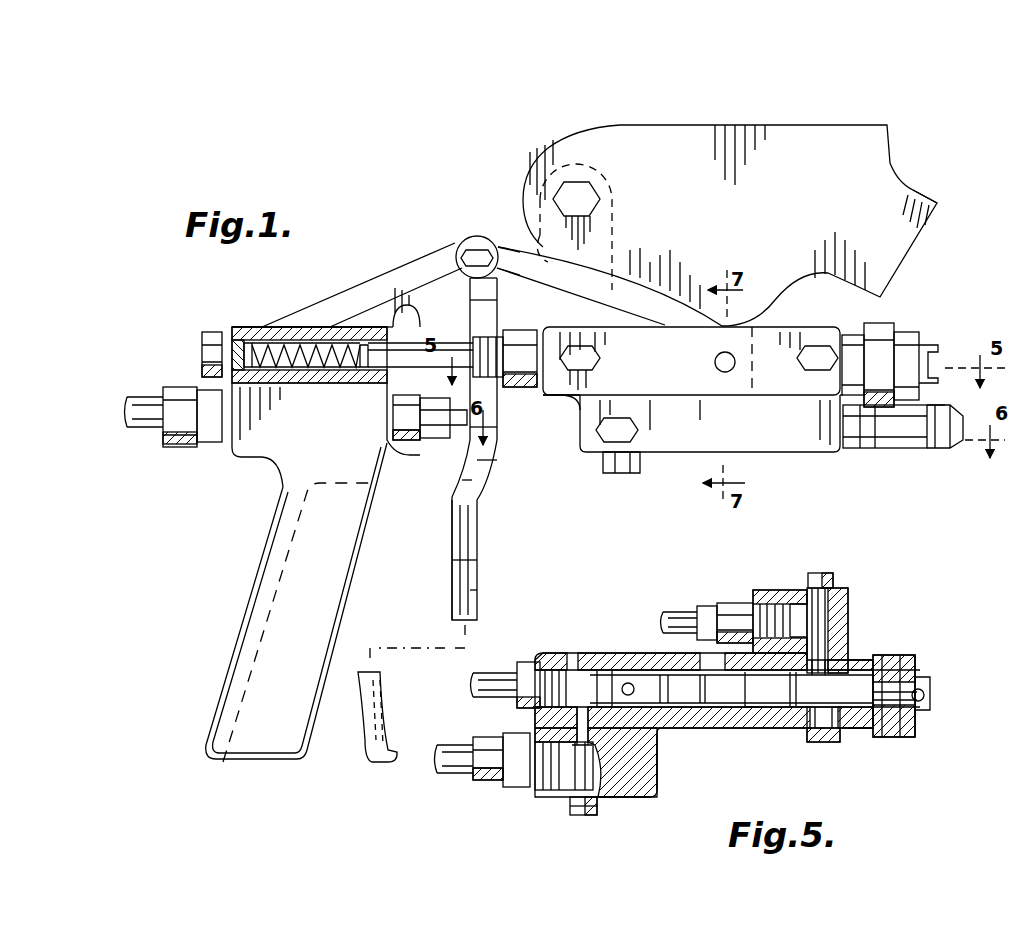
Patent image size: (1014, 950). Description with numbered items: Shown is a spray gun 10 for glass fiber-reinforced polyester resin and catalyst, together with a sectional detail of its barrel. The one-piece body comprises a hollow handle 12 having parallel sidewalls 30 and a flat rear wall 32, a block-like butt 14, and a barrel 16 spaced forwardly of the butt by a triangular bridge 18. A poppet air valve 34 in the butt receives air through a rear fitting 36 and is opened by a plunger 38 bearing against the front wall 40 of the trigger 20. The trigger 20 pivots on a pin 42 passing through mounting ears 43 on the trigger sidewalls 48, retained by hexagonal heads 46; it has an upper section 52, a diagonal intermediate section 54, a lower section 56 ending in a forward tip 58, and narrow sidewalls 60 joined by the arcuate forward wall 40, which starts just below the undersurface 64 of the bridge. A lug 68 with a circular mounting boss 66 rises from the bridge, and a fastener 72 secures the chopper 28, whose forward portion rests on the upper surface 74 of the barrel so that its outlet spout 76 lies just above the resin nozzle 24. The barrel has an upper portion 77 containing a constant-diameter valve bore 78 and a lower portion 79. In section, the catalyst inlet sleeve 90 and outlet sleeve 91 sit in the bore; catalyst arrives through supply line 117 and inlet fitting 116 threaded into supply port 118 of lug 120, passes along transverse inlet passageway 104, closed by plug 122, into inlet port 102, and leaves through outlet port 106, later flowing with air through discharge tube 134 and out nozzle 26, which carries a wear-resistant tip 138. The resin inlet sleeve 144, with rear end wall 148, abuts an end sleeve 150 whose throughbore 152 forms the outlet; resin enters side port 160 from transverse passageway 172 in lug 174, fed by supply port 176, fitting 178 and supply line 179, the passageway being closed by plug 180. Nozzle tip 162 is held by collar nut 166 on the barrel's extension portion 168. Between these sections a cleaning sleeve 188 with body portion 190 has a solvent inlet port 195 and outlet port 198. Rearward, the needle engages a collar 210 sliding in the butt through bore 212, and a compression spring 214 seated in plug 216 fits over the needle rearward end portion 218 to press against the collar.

In FIG. 1, the spray gun 10 is at (210, 276).
In FIG. 1, the handle 12 is at (232, 620).
In FIG. 1, the butt 14 is at (232, 330).
In FIG. 1, the barrel 16 is at (770, 462).
In FIG. 1, the bridge 18 is at (440, 268).
In FIG. 1, the trigger 20 is at (442, 575).
In FIG. 1, the resin nozzle 24 is at (935, 345).
In FIG. 5, the resin nozzle 24 is at (930, 725).
In FIG. 1, the catalyst nozzle 26 is at (945, 450).
In FIG. 1, the chopper 28 is at (562, 148).
In FIG. 1, the sidewalls 30 is at (262, 730).
In FIG. 1, the rear wall 32 is at (245, 540).
In FIG. 1, the air valve 34 is at (418, 445).
In FIG. 1, the rear fitting 36 is at (200, 445).
In FIG. 1, the plunger 38 is at (455, 430).
In FIG. 1, the front wall 40 is at (480, 548).
In FIG. 1, the pin 42 is at (478, 236).
In FIG. 1, the mounting ears 43 is at (468, 330).
In FIG. 1, the hexagonally shaped heads 46 is at (466, 292).
In FIG. 1, the trigger sidewalls 48 is at (452, 546).
In FIG. 1, the upper section 52 is at (470, 240).
In FIG. 1, the intermediate diagonal section 54 is at (488, 503).
In FIG. 1, the lower section 56 is at (490, 585).
In FIG. 1, the tip 58 is at (380, 762).
In FIG. 1, the sidewalls 60 is at (480, 472).
In FIG. 1, the undersurface 64 is at (380, 328).
In FIG. 1, the mounting boss 66 is at (538, 190).
In FIG. 1, the lug 68 is at (543, 240).
In FIG. 1, the fastener 72 is at (588, 197).
In FIG. 1, the upper surface 74 is at (790, 330).
In FIG. 1, the outlet spout 76 is at (912, 250).
In FIG. 1, the upper portion 77 is at (815, 400).
In FIG. 5, the bore 78 is at (770, 708).
In FIG. 1, the lower portion 79 is at (812, 450).
In FIG. 5, the inlet sleeve 90 is at (548, 653).
In FIG. 5, the outlet sleeve 91 is at (652, 678).
In FIG. 5, the inlet port 102 is at (630, 797).
In FIG. 5, the catalyst inlet passageway 104 is at (580, 724).
In FIG. 5, the outlet port 106 is at (626, 683).
In FIG. 1, the inlet fitting 116 is at (500, 345).
In FIG. 5, the inlet fitting 116 is at (492, 770).
In FIG. 5, the supply line 117 is at (460, 768).
In FIG. 5, the supply port 118 is at (540, 790).
In FIG. 1, the lug 120 is at (630, 362).
In FIG. 5, the threaded plug 122 is at (584, 815).
In FIG. 1, the discharge tube 134 is at (905, 448).
In FIG. 1, the tip 138 is at (945, 405).
In FIG. 5, the inlet sleeve 144 is at (843, 735).
In FIG. 5, the rear end wall 148 is at (805, 742).
In FIG. 5, the end sleeve 150 is at (919, 677).
In FIG. 5, the throughbore 152 is at (884, 690).
In FIG. 5, the side port 160 is at (824, 672).
In FIG. 1, the tip 162 is at (936, 360).
In FIG. 1, the collar nut 166 is at (882, 325).
In FIG. 1, the extension portion 168 is at (852, 335).
In FIG. 5, the transverse passageway 172 is at (834, 600).
In FIG. 5, the lug 174 is at (842, 622).
In FIG. 5, the supply port 176 is at (792, 596).
In FIG. 5, the threaded fitting 178 is at (736, 612).
In FIG. 5, the resin supply line 179 is at (680, 613).
In FIG. 5, the threaded plug 180 is at (826, 573).
In FIG. 5, the sleeve 188 is at (696, 735).
In FIG. 5, the body portion 190 is at (755, 730).
In FIG. 5, the inlet port 195 is at (728, 710).
In FIG. 5, the outlet port 198 is at (712, 640).
In FIG. 1, the collar 210 is at (392, 368).
In FIG. 1, the through bore 212 is at (312, 345).
In FIG. 1, the compression spring 214 is at (296, 345).
In FIG. 1, the plug 216 is at (212, 335).
In FIG. 1, the rearward end portion 218 is at (362, 370).